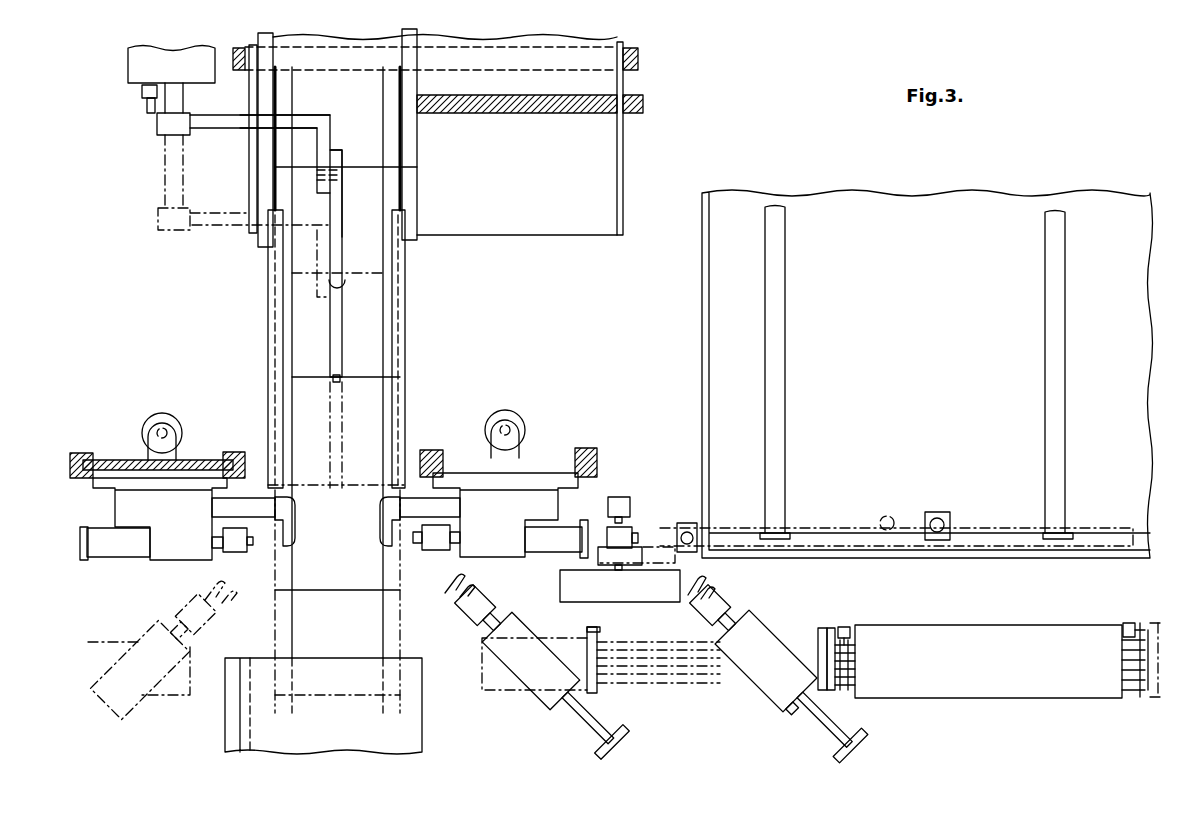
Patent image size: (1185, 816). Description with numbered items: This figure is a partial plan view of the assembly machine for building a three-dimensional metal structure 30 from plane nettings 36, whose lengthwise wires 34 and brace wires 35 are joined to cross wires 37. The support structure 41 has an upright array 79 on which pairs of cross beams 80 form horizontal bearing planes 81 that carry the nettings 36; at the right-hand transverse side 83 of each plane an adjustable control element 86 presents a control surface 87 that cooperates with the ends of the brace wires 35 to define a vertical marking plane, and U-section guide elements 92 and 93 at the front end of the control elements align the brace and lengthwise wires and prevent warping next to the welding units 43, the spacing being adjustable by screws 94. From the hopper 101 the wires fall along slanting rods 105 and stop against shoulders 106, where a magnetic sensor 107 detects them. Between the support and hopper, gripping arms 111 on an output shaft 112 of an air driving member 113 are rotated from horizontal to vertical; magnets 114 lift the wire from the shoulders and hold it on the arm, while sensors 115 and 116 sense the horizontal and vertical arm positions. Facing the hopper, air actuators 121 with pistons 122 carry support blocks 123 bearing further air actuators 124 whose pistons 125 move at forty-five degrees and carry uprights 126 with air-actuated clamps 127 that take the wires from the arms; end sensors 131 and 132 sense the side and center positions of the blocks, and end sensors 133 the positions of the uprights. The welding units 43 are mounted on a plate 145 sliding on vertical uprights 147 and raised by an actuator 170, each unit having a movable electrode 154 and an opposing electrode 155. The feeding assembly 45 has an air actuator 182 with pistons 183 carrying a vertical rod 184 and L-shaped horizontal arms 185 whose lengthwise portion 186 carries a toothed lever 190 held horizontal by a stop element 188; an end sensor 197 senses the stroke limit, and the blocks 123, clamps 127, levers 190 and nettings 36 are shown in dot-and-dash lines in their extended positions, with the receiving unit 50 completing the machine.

The three-dimensional metal structure 30 is at (411, 611).
The lengthwise wires 34 is at (397, 567).
The brace wires 35 is at (387, 167).
The plane nettings 36 is at (366, 115).
The cross wires 37 is at (1005, 540).
The support structure 41 is at (474, 294).
The welding units 43 is at (142, 576).
The feeding assembly 45 is at (150, 178).
The receiving unit 50 is at (433, 723).
The upright array 79 is at (233, 60).
The cross beams 80 is at (560, 60).
The bearing planes 81 is at (560, 225).
The transverse side 83 is at (623, 212).
The control element 86 is at (273, 86).
The control surface 87 is at (420, 49).
The guide element 92 is at (270, 364).
The guide element 93 is at (346, 278).
The screws 94 is at (646, 104).
The hopper 101 is at (702, 360).
The slanting rods 105 is at (773, 380).
The shoulders 106 is at (798, 525).
The magnetic sensor 107 is at (950, 517).
The gripping arms 111 is at (632, 528).
The output shaft 112 is at (622, 569).
The air driving member 113 is at (573, 588).
The magnets 114 is at (905, 509).
The sensor 115 is at (700, 524).
The sensor 116 is at (608, 508).
The air actuators 121 is at (990, 640).
The pistons 122 is at (848, 663).
The support blocks 123 is at (118, 643).
The air actuators 124 is at (140, 692).
The pistons 125 is at (845, 728).
The uprights 126 is at (183, 607).
The air-actuated clamps 127 is at (702, 588).
The end sensor 131 is at (1126, 625).
The end sensor 132 is at (850, 626).
The end sensors 133 is at (797, 708).
The plate 145 is at (112, 460).
The vertical uprights 147 is at (229, 452).
The movable electrode 154 is at (458, 536).
The opposing electrode 155 is at (388, 513).
The actuator 170 is at (155, 415).
The air actuator 182 is at (128, 68).
The pistons 183 is at (178, 96).
The vertical rod 184 is at (157, 128).
The L-shaped horizontal arms 185 is at (221, 117).
The lengthwise portion 186 is at (330, 138).
The stop element 188 is at (339, 178).
The toothed lever 190 is at (330, 329).
The end sensor 197 is at (142, 92).